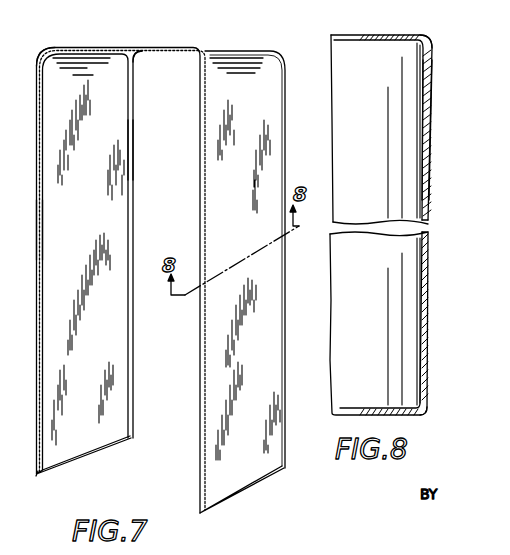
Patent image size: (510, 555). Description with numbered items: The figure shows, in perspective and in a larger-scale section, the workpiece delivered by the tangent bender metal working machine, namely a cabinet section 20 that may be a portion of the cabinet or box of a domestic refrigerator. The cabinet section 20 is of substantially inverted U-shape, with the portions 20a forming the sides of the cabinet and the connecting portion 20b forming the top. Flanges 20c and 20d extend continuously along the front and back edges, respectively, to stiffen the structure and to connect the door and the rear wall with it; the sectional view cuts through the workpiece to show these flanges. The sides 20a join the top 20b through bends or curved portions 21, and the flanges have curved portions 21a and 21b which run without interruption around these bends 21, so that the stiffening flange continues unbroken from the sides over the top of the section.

In FIG. 7, the cabinet section 20 is at (286, 121).
In FIG. 8, the cabinet section 20 is at (434, 81).
In FIG. 7, the side portions 20a is at (210, 201).
In FIG. 8, the side portions 20a is at (433, 136).
In FIG. 7, the connecting portion 20b is at (199, 50).
In FIG. 7, the front flange 20c is at (46, 212).
In FIG. 8, the front flange 20c is at (398, 37).
In FIG. 7, the back flange 20d is at (128, 150).
In FIG. 8, the back flange 20d is at (388, 408).
In FIG. 7, the bends 21 is at (248, 63).
In FIG. 7, the curved flange portion 21a is at (48, 62).
In FIG. 7, the curved flange portion 21b is at (137, 60).